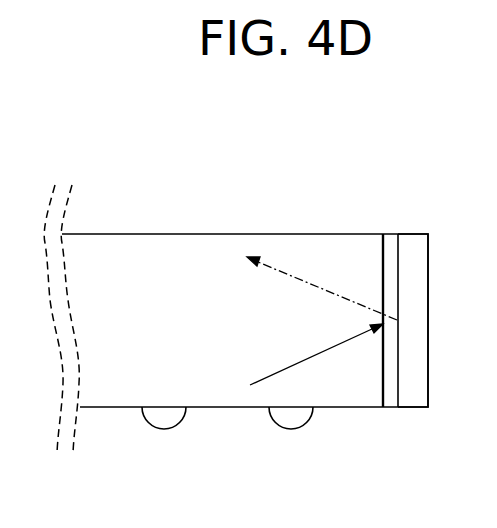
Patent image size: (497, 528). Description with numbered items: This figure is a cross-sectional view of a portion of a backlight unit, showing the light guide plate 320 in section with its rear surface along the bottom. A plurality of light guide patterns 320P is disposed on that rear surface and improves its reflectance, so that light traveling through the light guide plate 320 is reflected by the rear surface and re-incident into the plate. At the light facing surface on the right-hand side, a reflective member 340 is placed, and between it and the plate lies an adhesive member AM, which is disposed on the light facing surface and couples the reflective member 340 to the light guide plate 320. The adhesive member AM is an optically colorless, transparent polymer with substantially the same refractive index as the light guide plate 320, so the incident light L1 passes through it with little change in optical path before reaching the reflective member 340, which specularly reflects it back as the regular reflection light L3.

The light guide plate 320 is at (355, 390).
The light guide patterns 320P is at (290, 417).
The reflective member 340 is at (417, 390).
The adhesive member AM is at (390, 245).
The incident light L1 is at (301, 361).
The reflection light L3 is at (308, 284).